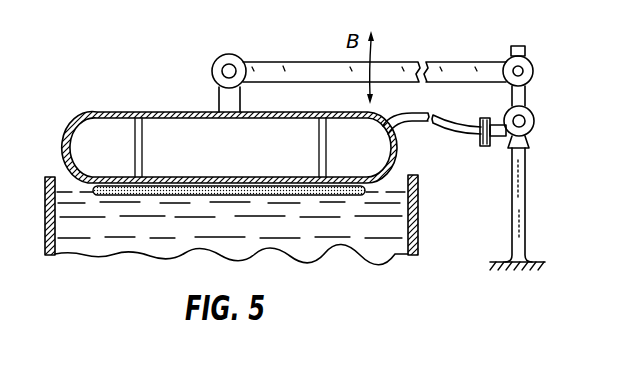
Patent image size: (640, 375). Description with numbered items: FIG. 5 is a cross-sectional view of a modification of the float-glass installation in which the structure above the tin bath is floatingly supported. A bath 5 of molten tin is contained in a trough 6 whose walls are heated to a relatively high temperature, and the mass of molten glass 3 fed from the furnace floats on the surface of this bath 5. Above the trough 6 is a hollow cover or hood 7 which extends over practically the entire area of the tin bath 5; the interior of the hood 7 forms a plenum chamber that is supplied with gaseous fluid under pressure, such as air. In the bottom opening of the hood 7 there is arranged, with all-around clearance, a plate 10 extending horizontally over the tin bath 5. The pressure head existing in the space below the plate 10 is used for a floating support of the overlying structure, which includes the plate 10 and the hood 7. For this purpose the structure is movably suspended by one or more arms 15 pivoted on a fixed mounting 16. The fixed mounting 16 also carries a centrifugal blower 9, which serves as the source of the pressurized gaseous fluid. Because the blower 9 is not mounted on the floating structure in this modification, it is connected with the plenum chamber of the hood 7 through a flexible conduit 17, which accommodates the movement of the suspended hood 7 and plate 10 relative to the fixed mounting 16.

The mass of molten glass 3 is at (204, 185).
The bath of molten tin 5 is at (219, 246).
The trough 6 is at (45, 236).
The hollow cover or hood 7 is at (165, 111).
The centrifugal blower 9 is at (488, 148).
The plate 10 is at (266, 177).
The arms 15 is at (437, 60).
The fixed mounting 16 is at (512, 228).
The flexible conduit 17 is at (440, 115).